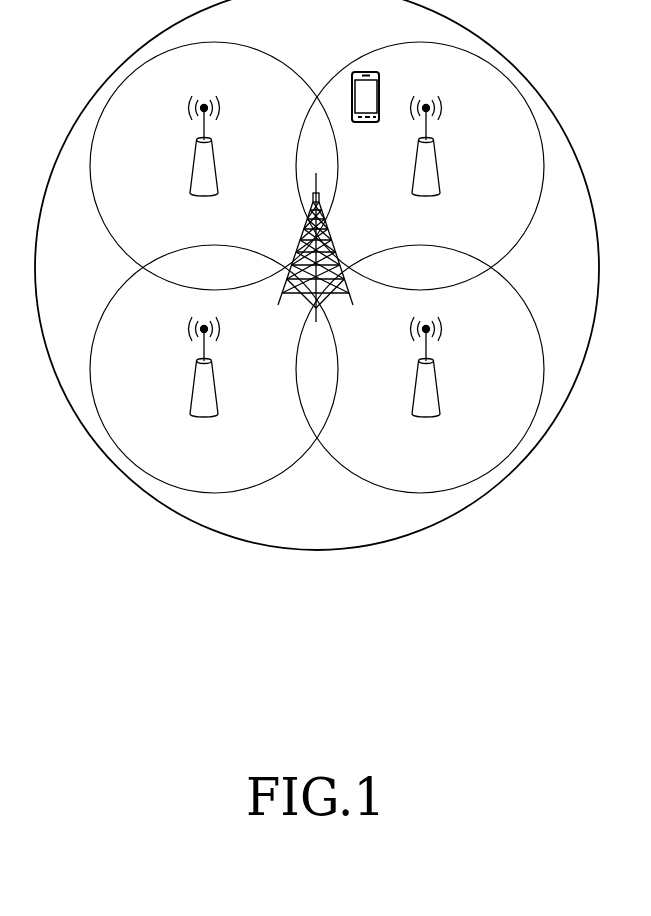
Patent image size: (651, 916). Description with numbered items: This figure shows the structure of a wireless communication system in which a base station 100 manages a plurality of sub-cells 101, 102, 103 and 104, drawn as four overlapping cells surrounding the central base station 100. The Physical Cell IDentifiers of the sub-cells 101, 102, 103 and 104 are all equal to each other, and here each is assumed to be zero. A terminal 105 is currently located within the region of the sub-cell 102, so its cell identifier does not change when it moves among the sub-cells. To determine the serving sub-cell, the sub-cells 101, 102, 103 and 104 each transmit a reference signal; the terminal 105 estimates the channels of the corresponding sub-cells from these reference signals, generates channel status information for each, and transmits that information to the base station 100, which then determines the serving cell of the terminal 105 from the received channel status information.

The base station 100 is at (333, 243).
The sub-cell 101 is at (214, 160).
The sub-cell 102 is at (436, 160).
The sub-cell 103 is at (436, 381).
The sub-cell 104 is at (214, 381).
The terminal 105 is at (380, 75).